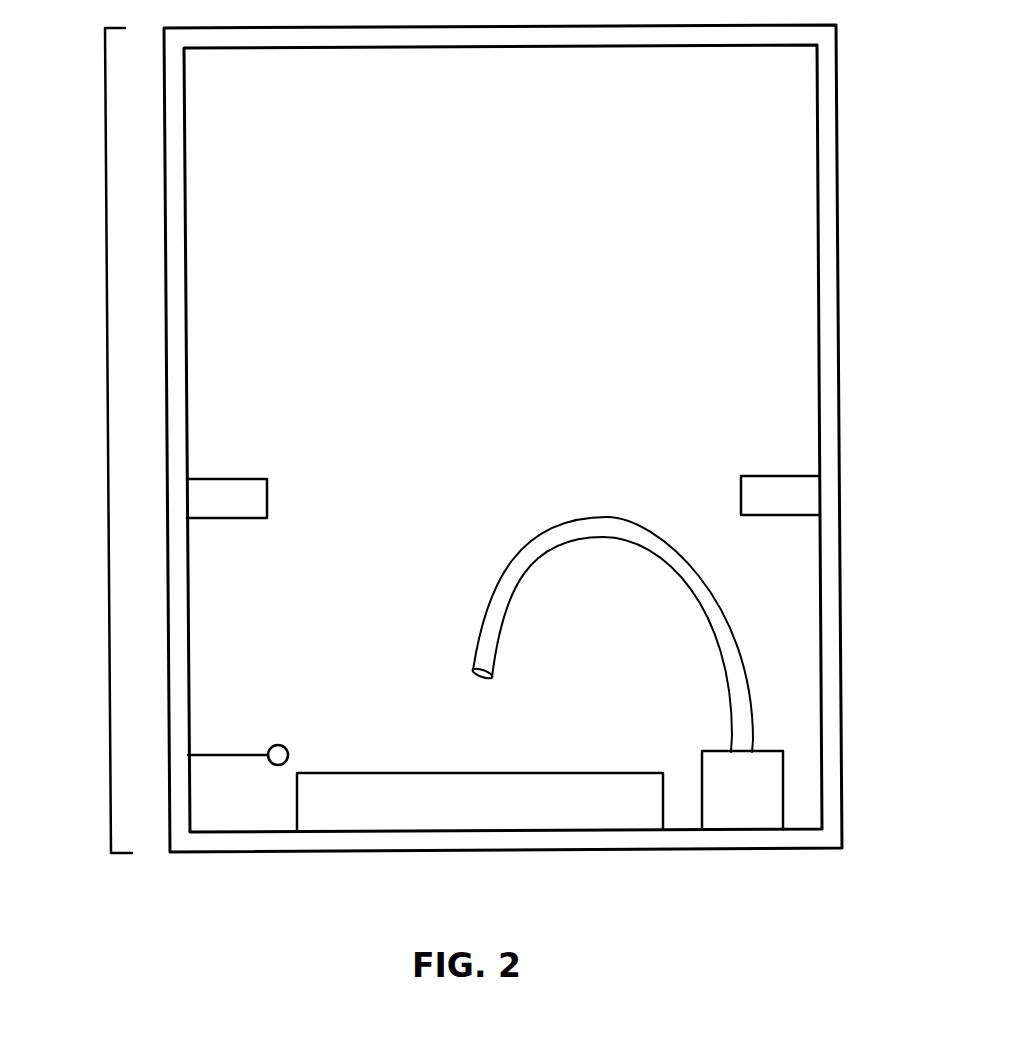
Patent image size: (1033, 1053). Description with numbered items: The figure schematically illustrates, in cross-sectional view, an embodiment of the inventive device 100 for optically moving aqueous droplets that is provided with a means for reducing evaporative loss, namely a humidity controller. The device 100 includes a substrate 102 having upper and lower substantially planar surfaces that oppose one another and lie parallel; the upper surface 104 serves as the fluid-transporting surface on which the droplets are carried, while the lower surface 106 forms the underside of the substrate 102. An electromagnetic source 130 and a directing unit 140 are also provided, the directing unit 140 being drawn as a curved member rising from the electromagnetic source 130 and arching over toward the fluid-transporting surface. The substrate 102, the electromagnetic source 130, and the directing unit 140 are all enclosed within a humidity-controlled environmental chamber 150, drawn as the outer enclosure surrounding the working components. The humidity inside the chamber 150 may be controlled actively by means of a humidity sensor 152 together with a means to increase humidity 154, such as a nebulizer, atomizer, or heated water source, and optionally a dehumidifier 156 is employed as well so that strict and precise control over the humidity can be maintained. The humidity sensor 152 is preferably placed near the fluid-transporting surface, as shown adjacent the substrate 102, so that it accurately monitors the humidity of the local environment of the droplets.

The device 100 is at (108, 442).
The humidity-controlled environmental chamber 150 is at (834, 183).
The lower surface 106 is at (410, 833).
The means to increase humidity 154 is at (229, 486).
The dehumidifier 156 is at (779, 481).
The directing unit 140 is at (611, 517).
The electromagnetic source 130 is at (712, 757).
The upper surface 104 is at (361, 773).
The substrate 102 is at (296, 806).
The humidity sensor 152 is at (222, 752).